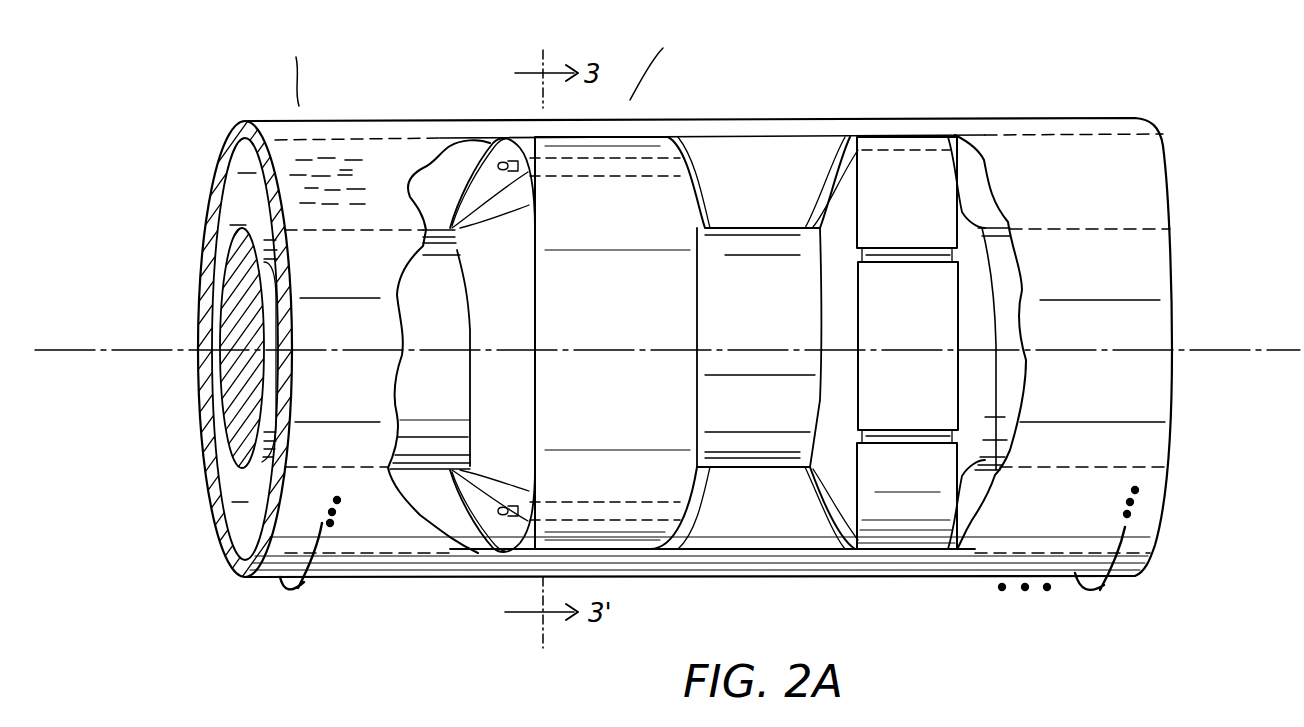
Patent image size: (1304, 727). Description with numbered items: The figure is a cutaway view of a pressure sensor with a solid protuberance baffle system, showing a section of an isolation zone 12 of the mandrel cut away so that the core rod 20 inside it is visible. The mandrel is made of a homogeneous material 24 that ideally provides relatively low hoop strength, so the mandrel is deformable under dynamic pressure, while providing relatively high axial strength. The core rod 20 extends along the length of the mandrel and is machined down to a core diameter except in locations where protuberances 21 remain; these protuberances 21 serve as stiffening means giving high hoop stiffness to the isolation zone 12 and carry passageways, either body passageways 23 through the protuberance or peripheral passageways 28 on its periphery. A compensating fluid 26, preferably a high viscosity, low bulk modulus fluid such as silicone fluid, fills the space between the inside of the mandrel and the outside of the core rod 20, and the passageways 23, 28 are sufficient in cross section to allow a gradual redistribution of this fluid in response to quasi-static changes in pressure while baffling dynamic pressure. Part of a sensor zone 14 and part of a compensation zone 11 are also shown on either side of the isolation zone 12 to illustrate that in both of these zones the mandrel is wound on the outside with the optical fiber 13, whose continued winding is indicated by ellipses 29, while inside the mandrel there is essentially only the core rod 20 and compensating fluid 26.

The compensation zone 11 is at (1091, 110).
The isolation zone 12 is at (626, 106).
The optical fiber 13 is at (304, 582).
The sensor zone 14 is at (300, 112).
The core rod 20 is at (453, 314).
The protuberance 21 is at (625, 311).
The body passageway 23 is at (597, 163).
The homogeneous material 24 is at (243, 576).
The compensating fluid 26 is at (335, 165).
The peripheral passageway 28 is at (877, 137).
The ellipses 29 is at (324, 510).